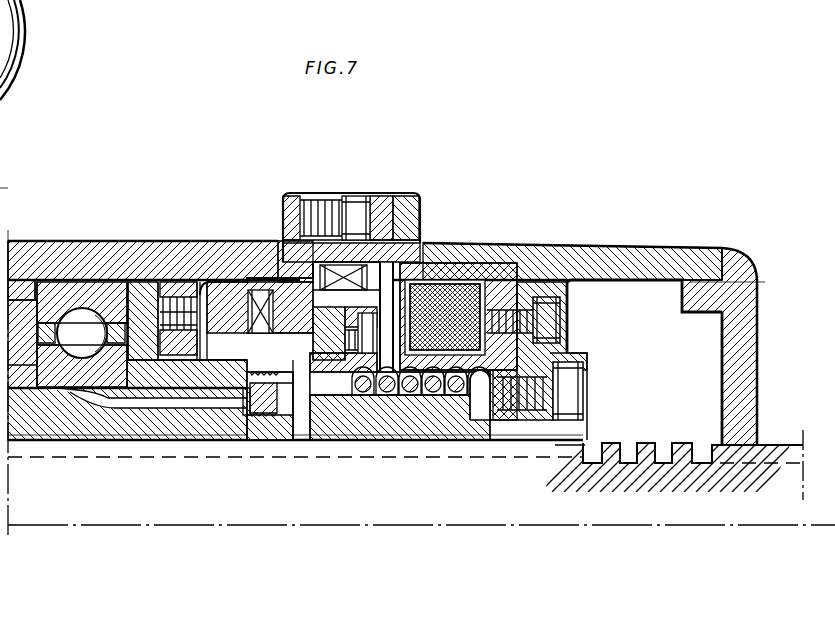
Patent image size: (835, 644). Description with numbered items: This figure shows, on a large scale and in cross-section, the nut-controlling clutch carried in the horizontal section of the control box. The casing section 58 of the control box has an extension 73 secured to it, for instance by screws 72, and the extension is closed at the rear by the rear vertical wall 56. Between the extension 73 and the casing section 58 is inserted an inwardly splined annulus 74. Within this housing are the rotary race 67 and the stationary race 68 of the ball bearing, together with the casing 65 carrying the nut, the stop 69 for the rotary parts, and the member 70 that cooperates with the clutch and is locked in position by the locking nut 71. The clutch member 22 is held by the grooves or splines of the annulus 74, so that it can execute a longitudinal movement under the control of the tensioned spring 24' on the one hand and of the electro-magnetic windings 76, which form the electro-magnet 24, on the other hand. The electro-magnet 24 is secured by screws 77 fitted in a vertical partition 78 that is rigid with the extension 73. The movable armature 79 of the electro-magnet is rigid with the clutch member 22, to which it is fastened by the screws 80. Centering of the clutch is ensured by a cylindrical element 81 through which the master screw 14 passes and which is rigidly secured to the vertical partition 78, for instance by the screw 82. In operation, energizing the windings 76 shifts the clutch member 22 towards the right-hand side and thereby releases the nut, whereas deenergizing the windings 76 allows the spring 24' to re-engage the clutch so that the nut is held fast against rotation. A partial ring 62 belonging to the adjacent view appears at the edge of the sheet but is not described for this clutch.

The master screw 14 is at (651, 490).
The clutch member 22 is at (285, 297).
The electro-magnet 24 is at (520, 447).
The tensioned spring 24' is at (400, 453).
The rear vertical wall 56 is at (745, 364).
The casing section of the control box 58 is at (103, 264).
The adjacent figure ring 62 is at (12, 72).
The casing carrying the nut 65 is at (134, 420).
The rotary race 67 is at (62, 380).
The stationary race 68 is at (53, 297).
The stop 69 is at (148, 290).
The member cooperating with the clutch 70 is at (197, 380).
The locking nut 71 is at (270, 415).
The screws 72 is at (358, 192).
The extension 73 is at (526, 250).
The inwardly splined annulus 74 is at (301, 192).
The electro-magnetic windings 76 is at (452, 318).
The screws 77 is at (553, 320).
The vertical partition 78 is at (553, 356).
The movable armature 79 is at (398, 273).
The screws 80 is at (387, 392).
The cylindrical element 81 is at (483, 443).
The screw 82 is at (583, 412).